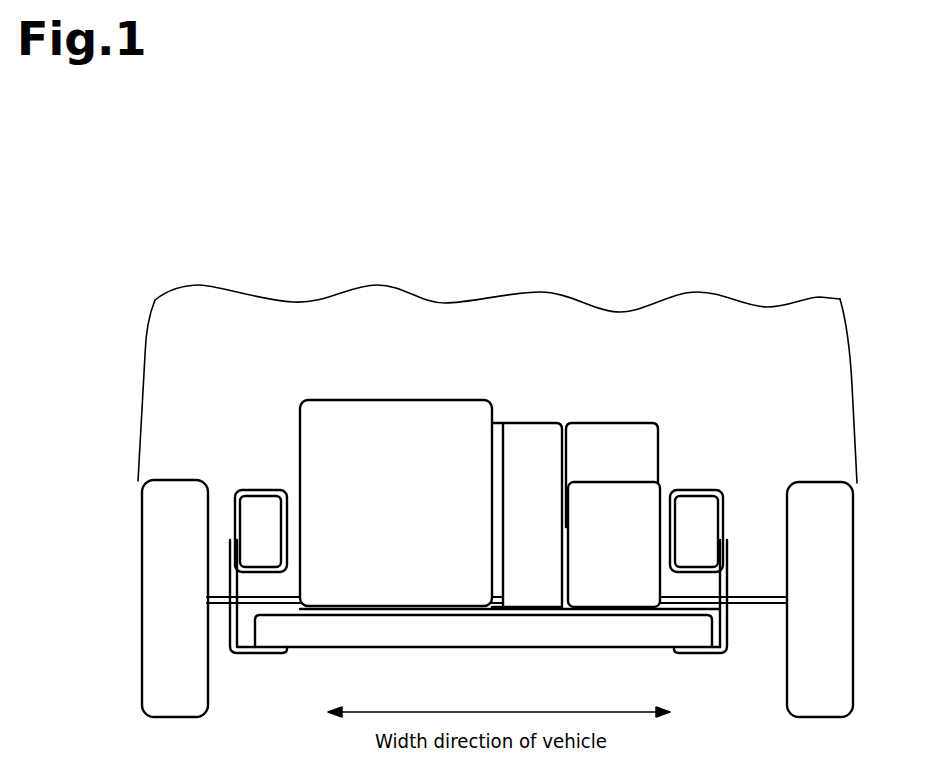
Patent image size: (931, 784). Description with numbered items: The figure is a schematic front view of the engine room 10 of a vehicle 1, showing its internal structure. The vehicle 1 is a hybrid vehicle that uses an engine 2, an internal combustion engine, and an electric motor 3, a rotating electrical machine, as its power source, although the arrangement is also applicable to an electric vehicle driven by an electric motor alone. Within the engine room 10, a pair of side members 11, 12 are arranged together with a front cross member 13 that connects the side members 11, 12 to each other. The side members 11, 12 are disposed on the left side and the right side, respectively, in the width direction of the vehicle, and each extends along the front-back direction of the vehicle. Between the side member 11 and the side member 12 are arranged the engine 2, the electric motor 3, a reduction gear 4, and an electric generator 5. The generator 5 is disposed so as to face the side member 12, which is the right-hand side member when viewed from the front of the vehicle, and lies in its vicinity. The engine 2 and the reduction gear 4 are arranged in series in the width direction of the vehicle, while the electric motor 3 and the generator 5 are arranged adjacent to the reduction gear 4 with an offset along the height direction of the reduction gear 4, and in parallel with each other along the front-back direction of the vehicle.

The vehicle 1 is at (690, 246).
The engine 2 is at (412, 417).
The electric motor 3 is at (611, 437).
The reduction gear 4 is at (534, 432).
The electric generator 5 is at (632, 498).
The engine room 10 is at (359, 358).
The side member 11 is at (258, 487).
The side member 12 is at (700, 488).
The front cross member 13 is at (448, 637).